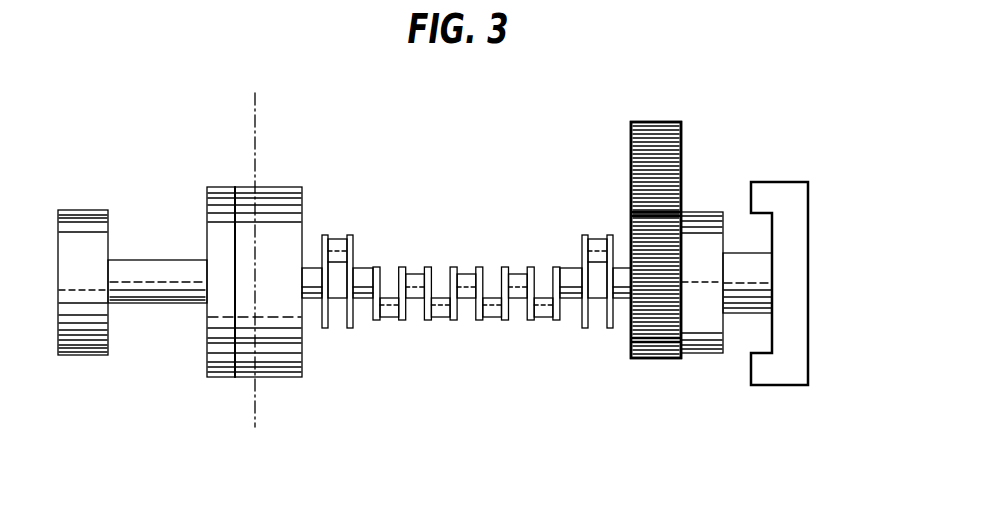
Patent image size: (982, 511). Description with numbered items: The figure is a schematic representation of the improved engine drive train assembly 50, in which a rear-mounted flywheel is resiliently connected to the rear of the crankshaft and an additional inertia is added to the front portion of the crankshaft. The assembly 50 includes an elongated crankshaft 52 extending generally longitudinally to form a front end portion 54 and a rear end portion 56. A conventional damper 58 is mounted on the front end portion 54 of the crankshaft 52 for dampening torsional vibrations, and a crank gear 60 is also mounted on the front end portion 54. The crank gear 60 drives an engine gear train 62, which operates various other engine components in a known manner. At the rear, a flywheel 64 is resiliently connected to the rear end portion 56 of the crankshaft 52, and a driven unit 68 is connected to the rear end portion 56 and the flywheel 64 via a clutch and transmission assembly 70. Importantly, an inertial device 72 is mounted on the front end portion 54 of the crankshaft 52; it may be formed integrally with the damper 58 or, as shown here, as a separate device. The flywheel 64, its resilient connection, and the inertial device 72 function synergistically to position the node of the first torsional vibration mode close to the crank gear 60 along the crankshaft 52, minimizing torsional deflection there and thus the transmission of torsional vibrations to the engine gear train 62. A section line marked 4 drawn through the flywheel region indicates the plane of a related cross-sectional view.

The section line 4- 4 is at (255, 93).
The improved engine drive train assembly 50 is at (478, 112).
The crankshaft 52 is at (465, 272).
The front end portion 54 is at (736, 364).
The rear end portion 56 is at (311, 328).
The damper 58 is at (795, 248).
The crank gear 60 is at (652, 358).
The engine gear train 62 is at (661, 122).
The flywheel 64 is at (277, 180).
The driven unit 68 is at (82, 222).
The clutch and transmission assembly 70 is at (219, 187).
The inertial device 72 is at (711, 212).